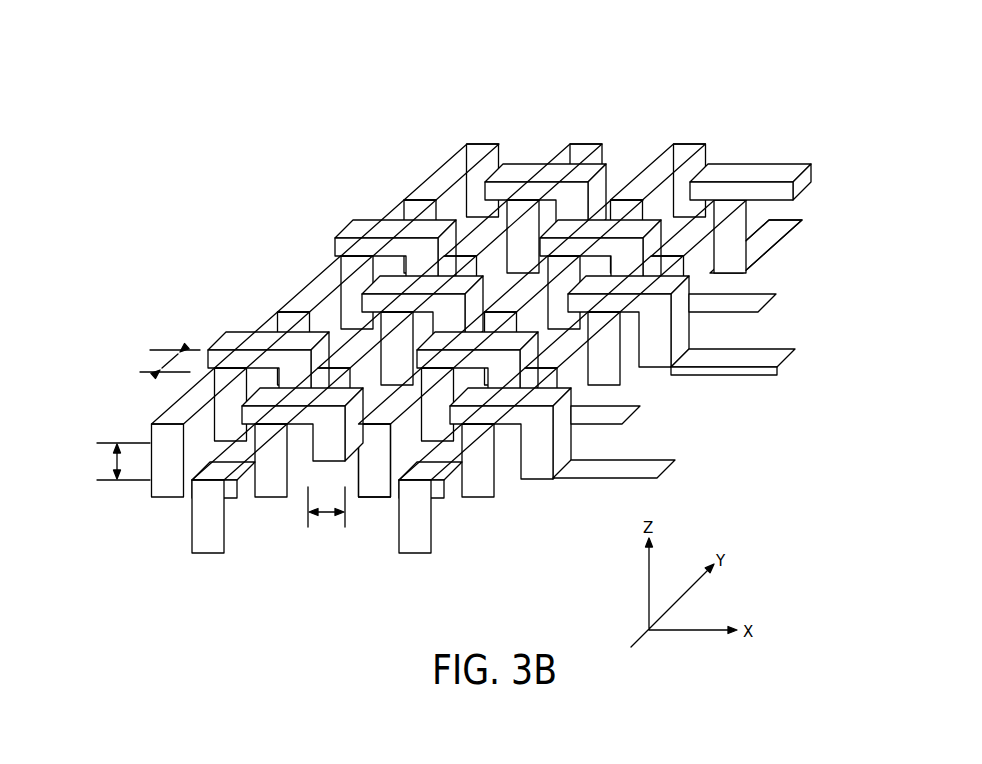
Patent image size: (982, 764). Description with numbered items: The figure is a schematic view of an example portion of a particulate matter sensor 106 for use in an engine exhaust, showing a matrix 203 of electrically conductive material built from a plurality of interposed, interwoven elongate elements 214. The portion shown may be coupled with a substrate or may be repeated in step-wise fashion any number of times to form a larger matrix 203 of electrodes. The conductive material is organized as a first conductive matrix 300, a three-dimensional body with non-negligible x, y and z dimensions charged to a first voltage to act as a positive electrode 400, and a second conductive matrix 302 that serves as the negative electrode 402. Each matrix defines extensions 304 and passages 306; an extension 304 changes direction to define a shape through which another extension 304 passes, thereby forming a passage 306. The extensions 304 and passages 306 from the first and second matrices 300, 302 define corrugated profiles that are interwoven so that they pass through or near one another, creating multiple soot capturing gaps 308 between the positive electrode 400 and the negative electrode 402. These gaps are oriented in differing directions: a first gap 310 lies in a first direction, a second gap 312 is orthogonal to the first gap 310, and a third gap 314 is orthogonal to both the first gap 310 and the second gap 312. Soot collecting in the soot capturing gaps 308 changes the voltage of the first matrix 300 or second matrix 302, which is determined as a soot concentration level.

The particulate matter sensor 106 is at (494, 317).
The matrix of electrically conductive material 203 is at (494, 333).
The interwoven elongate elements 214 is at (690, 141).
The first conductive matrix 300 is at (371, 498).
The second conductive matrix 302 is at (640, 415).
The extensions 304 is at (166, 500).
The passages 306 is at (572, 388).
The soot capturing gaps 308 is at (191, 451).
The first gap 310 is at (116, 462).
The second gap 312 is at (167, 363).
The third gap 314 is at (326, 514).
The positive electrode 400 is at (389, 512).
The negative electrode 402 is at (665, 467).